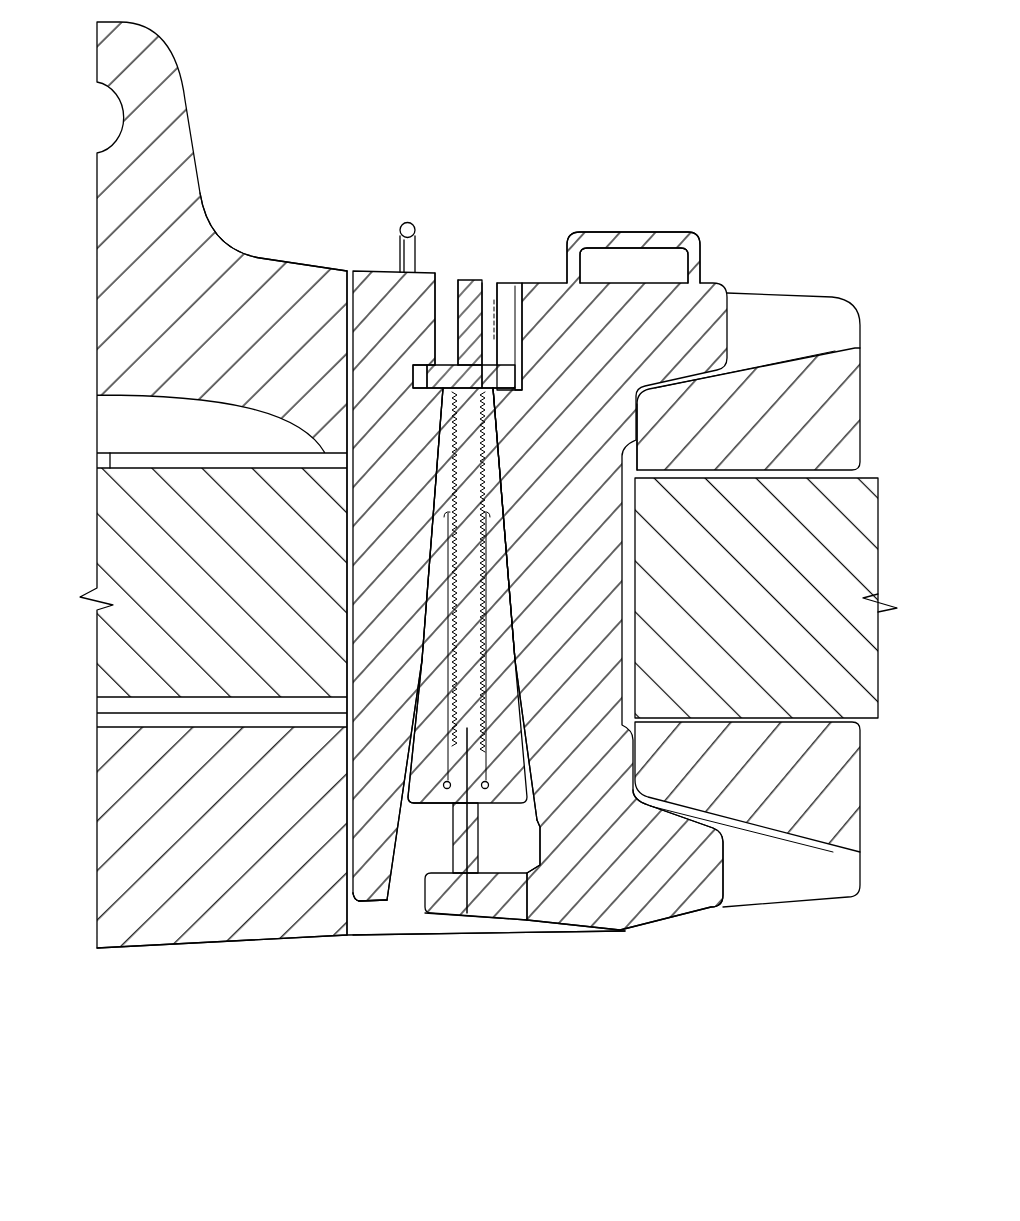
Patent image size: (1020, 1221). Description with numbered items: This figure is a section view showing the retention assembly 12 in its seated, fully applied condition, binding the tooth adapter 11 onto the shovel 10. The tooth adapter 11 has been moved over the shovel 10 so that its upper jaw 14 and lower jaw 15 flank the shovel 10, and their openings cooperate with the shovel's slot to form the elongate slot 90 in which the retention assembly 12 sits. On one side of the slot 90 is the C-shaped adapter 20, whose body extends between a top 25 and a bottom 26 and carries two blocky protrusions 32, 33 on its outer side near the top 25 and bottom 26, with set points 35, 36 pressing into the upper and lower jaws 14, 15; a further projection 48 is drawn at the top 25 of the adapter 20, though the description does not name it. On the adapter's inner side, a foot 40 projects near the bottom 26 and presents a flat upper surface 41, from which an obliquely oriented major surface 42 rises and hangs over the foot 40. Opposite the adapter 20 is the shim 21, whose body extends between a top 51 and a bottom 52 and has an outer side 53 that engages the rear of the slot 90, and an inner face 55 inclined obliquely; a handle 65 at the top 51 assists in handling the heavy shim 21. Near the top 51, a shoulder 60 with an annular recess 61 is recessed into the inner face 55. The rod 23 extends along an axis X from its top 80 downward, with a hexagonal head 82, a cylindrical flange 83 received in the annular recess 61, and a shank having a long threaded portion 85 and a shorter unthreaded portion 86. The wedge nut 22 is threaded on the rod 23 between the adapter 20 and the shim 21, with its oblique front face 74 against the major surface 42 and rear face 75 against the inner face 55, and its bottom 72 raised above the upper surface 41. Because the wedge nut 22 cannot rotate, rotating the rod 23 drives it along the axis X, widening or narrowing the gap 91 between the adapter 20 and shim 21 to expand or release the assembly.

The shovel 10 is at (92, 628).
The tooth adapter 11 is at (95, 352).
The retention assembly 12 is at (663, 123).
The upper jaw 14 is at (297, 262).
The lower jaw 15 is at (272, 943).
The adapter 20 is at (710, 916).
The shim 21 is at (383, 908).
The wedge nut 22 is at (538, 770).
The rod 23 is at (488, 280).
The top 25 is at (707, 283).
The bottom 26 is at (660, 922).
The protrusion 32 is at (740, 325).
The protrusion 33 is at (728, 880).
The set point 35 is at (640, 447).
The set point 36 is at (640, 752).
The foot 40 is at (470, 915).
The upper surface 41 is at (518, 905).
The major surface 42 is at (512, 667).
The lug 48 is at (673, 232).
The top 51 is at (425, 272).
The bottom 52 is at (350, 913).
The outer side 53 is at (346, 325).
The inner face 55 is at (422, 673).
The shoulder 60 is at (412, 363).
The annular recess 61 is at (345, 497).
The handle 65 is at (415, 232).
The bottom 72 is at (430, 806).
The front face 74 is at (525, 705).
The rear face 75 is at (412, 718).
The top 80 is at (463, 280).
The head 82 is at (500, 340).
The flange 83 is at (515, 383).
The threaded portion 85 is at (485, 637).
The unthreaded portion 86 is at (482, 833).
The elongate slot 90 is at (425, 930).
The gap 91 is at (478, 483).
The axis X is at (475, 880).